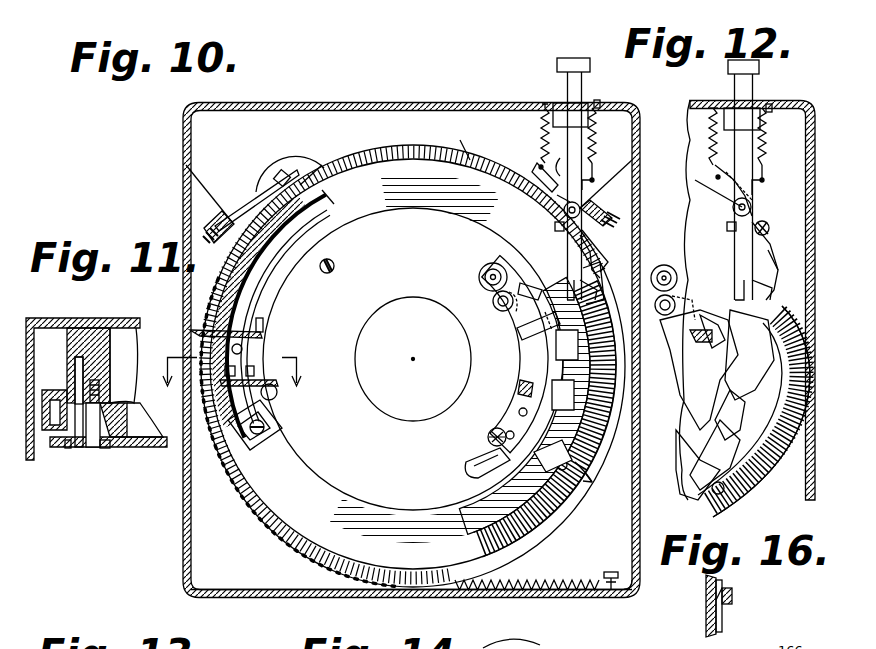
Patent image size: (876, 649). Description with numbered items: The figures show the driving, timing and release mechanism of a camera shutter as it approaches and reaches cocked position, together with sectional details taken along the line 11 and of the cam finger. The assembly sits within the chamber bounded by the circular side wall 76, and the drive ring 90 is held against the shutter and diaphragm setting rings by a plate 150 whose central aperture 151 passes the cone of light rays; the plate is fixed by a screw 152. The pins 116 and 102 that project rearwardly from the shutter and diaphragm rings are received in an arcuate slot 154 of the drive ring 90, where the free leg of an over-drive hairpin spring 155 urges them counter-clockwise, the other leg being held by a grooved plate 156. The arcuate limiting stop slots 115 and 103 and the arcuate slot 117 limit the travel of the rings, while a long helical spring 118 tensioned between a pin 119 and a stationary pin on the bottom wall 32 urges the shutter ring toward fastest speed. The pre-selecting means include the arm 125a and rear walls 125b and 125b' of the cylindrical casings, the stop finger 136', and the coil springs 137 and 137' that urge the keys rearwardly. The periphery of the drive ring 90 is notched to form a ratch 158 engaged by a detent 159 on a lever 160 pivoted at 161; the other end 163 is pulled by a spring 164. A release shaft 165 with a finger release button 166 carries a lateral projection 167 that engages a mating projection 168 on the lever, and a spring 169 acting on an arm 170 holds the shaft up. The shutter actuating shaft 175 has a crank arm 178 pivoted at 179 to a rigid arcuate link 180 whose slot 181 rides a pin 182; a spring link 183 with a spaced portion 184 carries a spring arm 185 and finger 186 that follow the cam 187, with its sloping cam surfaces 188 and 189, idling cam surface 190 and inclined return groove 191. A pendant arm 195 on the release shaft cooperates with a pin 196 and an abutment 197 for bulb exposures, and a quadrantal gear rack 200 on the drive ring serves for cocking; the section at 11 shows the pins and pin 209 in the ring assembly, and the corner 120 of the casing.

In FIG. 10, the section line 11 is at (236, 387).
In FIG. 10, the bottom wall 32 is at (506, 597).
In FIG. 11, the circular side wall 76 is at (88, 345).
In FIG. 10, the drive ring 90 is at (425, 150).
In FIG. 10, the pin 102 is at (258, 371).
In FIG. 11, the pin 102 is at (94, 450).
In FIG. 10, the arcuate limiting stop slot 103 is at (250, 312).
In FIG. 10, the arcuate limiting stop slot 115 is at (338, 208).
In FIG. 10, the pin 116 is at (215, 352).
In FIG. 11, the pin 116 is at (67, 450).
In FIG. 10, the arcuate slot 117 is at (325, 475).
In FIG. 10, the long helical spring 118 is at (598, 578).
In FIG. 10, the pin 119 is at (225, 462).
In FIG. 10, the housing corner 120 is at (634, 598).
In FIG. 10, the arm 125a is at (270, 180).
In FIG. 10, the rear wall 125b is at (485, 143).
In FIG. 10, the rear wall 125b' is at (335, 137).
In FIG. 10, the stop finger 136' is at (286, 153).
In FIG. 10, the coil spring 137 is at (608, 193).
In FIG. 10, the coil spring 137' is at (242, 204).
In FIG. 10, the plate 150 is at (406, 430).
In FIG. 10, the central aperture 151 is at (440, 304).
In FIG. 10, the screw 152 is at (334, 262).
In FIG. 10, the arcuate slot 154 is at (322, 172).
In FIG. 10, the over-drive hairpin spring 155 is at (278, 400).
In FIG. 11, the over-drive hairpin spring 155 is at (108, 448).
In FIG. 10, the grooved plate 156 is at (262, 444).
In FIG. 10, the ratch 158 is at (600, 258).
In FIG. 12, the ratch 158 is at (774, 272).
In FIG. 10, the detent 159 is at (589, 287).
In FIG. 12, the detent 159 is at (774, 292).
In FIG. 12, the lever 160 is at (770, 236).
In FIG. 12, the pivot 161 is at (768, 226).
In FIG. 10, the other end 163 is at (538, 165).
In FIG. 12, the other end 163 is at (720, 178).
In FIG. 10, the spring 164 is at (540, 130).
In FIG. 12, the spring 164 is at (712, 135).
In FIG. 10, the release shaft 165 is at (567, 80).
In FIG. 12, the release shaft 165 is at (752, 92).
In FIG. 10, the finger release button 166 is at (562, 58).
In FIG. 12, the finger release button 166 is at (760, 66).
In FIG. 10, the lateral projection 167 is at (574, 162).
In FIG. 10, the mating projection 168 is at (556, 210).
In FIG. 12, the mating projection 168 is at (715, 190).
In FIG. 10, the spring 169 is at (598, 130).
In FIG. 12, the spring 169 is at (766, 150).
In FIG. 10, the arm 170 is at (598, 163).
In FIG. 12, the arm 170 is at (768, 176).
In FIG. 10, the shutter actuating shaft 175 is at (482, 272).
In FIG. 12, the shutter actuating shaft 175 is at (666, 263).
In FIG. 10, the crank arm 178 is at (493, 298).
In FIG. 12, the crank arm 178 is at (676, 300).
In FIG. 10, the pivot 179 is at (505, 310).
In FIG. 12, the pivot 179 is at (694, 308).
In FIG. 10, the rigid arcuate link 180 is at (512, 318).
In FIG. 12, the rigid arcuate link 180 is at (676, 360).
In FIG. 10, the slot 181 is at (470, 472).
In FIG. 10, the pin 182 is at (490, 447).
In FIG. 10, the spring link 183 is at (518, 420).
In FIG. 10, the portion 184 is at (520, 384).
In FIG. 10, the spring arm 185 is at (536, 303).
In FIG. 12, the spring arm 185 is at (700, 352).
In FIG. 16, the spring arm 185 is at (732, 598).
In FIG. 10, the finger 186 is at (537, 326).
In FIG. 16, the finger 186 is at (722, 592).
In FIG. 10, the cam 187 is at (603, 452).
In FIG. 12, the cam 187 is at (749, 348).
In FIG. 16, the cam 187 is at (706, 607).
In FIG. 10, the cam surface 188 is at (570, 351).
In FIG. 12, the cam surface 188 is at (728, 402).
In FIG. 12, the cam surface 189 is at (685, 458).
In FIG. 10, the idling cam surface 190 is at (565, 396).
In FIG. 12, the idling cam surface 190 is at (718, 428).
In FIG. 10, the inclined return groove 191 is at (538, 470).
In FIG. 12, the inclined return groove 191 is at (750, 462).
In FIG. 16, the inclined return groove 191 is at (722, 622).
In FIG. 10, the pendant arm 195 is at (568, 280).
In FIG. 12, the pendant arm 195 is at (735, 280).
In FIG. 10, the pin 196 is at (590, 495).
In FIG. 12, the pin 196 is at (740, 483).
In FIG. 10, the abutment 197 is at (556, 228).
In FIG. 12, the abutment 197 is at (728, 232).
In FIG. 10, the quadrantal gear rack 200 is at (526, 548).
In FIG. 12, the quadrantal gear rack 200 is at (784, 420).
In FIG. 10, the pin 209 is at (255, 352).
In FIG. 11, the pin 209 is at (80, 448).